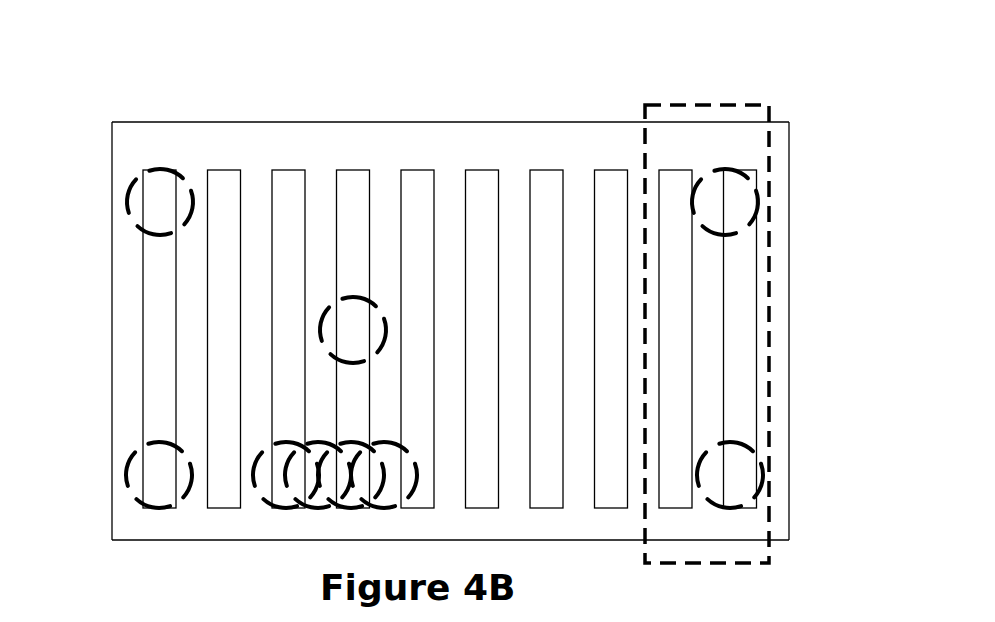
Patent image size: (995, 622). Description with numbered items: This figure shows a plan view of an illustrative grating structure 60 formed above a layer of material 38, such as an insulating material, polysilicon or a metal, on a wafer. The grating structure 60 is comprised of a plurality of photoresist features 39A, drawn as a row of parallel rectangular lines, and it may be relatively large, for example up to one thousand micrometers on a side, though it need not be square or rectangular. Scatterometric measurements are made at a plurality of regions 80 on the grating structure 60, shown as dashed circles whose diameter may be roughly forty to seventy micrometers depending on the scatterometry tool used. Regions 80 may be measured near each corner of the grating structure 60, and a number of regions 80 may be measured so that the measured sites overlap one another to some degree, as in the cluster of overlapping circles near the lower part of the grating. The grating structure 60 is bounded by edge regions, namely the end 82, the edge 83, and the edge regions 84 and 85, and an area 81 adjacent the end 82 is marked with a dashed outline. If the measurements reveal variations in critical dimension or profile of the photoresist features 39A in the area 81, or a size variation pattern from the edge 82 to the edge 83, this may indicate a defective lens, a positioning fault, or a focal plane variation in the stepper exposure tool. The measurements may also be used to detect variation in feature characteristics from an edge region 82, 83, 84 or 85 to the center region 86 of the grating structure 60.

The grating structure 60 is at (572, 104).
The layer of material 38 is at (177, 138).
The edge region 84 is at (313, 123).
The edge 83 is at (112, 317).
The end 82 is at (789, 318).
The edge region 85 is at (207, 541).
The photoresist features 39A is at (358, 187).
The regions 80 is at (140, 175).
The area 81 is at (757, 563).
The center region 86 is at (430, 313).